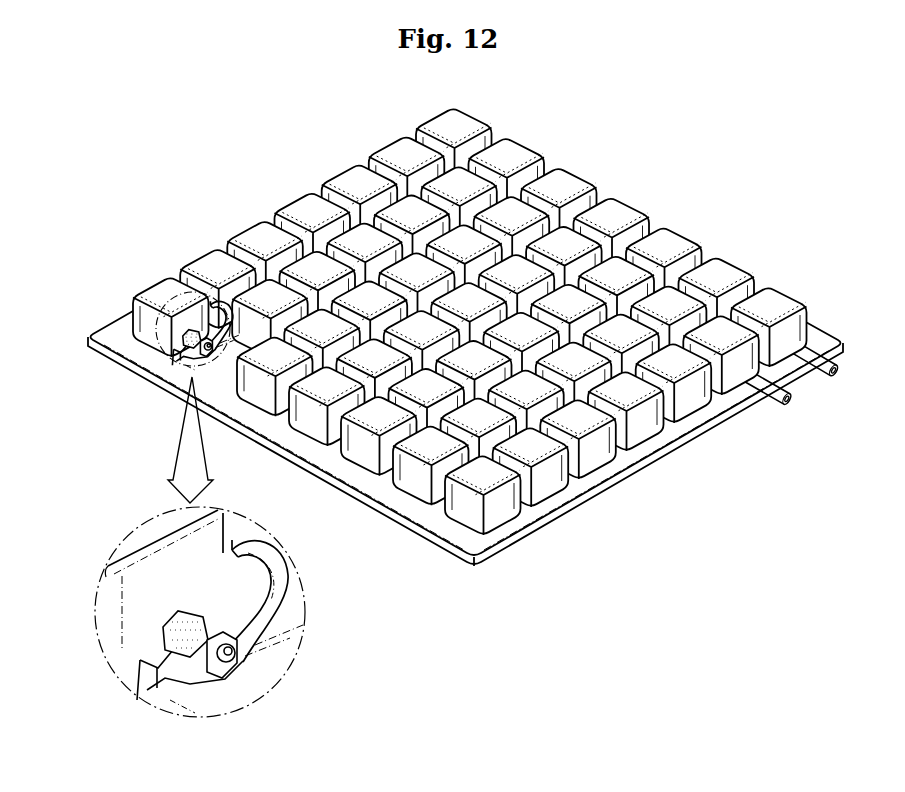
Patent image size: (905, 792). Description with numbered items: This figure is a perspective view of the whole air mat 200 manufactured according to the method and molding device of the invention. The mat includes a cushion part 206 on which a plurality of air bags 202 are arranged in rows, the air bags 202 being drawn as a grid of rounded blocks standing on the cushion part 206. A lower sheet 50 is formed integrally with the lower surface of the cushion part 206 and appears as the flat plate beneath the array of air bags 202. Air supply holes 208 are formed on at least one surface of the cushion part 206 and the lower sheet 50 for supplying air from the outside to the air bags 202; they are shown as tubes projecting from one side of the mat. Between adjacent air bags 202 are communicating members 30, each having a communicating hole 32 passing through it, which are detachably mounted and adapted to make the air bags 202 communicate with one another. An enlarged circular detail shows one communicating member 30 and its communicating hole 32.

The air cell cushion 200 is at (427, 385).
The air bag 202 is at (212, 263).
The cushion part 206 is at (140, 283).
The air supply hole 208 is at (779, 404).
The lower sheet 50 is at (507, 539).
The communicating member 30 is at (172, 637).
The communicating hole 32 is at (229, 662).